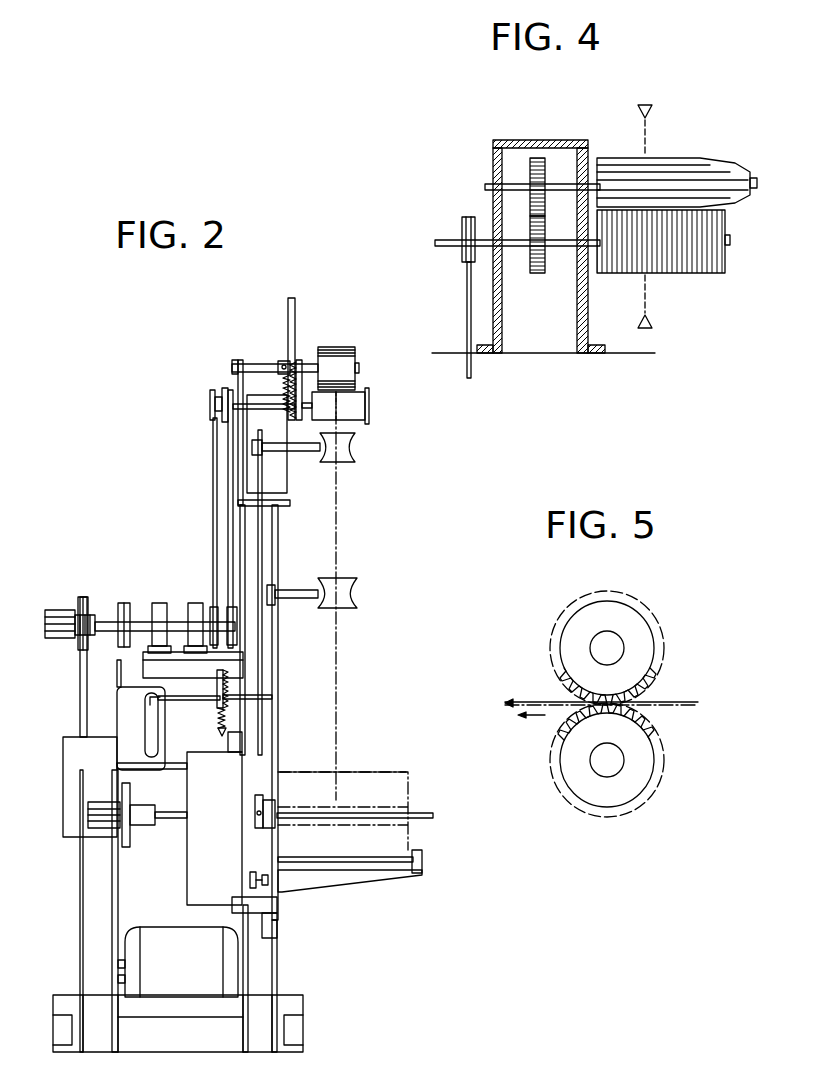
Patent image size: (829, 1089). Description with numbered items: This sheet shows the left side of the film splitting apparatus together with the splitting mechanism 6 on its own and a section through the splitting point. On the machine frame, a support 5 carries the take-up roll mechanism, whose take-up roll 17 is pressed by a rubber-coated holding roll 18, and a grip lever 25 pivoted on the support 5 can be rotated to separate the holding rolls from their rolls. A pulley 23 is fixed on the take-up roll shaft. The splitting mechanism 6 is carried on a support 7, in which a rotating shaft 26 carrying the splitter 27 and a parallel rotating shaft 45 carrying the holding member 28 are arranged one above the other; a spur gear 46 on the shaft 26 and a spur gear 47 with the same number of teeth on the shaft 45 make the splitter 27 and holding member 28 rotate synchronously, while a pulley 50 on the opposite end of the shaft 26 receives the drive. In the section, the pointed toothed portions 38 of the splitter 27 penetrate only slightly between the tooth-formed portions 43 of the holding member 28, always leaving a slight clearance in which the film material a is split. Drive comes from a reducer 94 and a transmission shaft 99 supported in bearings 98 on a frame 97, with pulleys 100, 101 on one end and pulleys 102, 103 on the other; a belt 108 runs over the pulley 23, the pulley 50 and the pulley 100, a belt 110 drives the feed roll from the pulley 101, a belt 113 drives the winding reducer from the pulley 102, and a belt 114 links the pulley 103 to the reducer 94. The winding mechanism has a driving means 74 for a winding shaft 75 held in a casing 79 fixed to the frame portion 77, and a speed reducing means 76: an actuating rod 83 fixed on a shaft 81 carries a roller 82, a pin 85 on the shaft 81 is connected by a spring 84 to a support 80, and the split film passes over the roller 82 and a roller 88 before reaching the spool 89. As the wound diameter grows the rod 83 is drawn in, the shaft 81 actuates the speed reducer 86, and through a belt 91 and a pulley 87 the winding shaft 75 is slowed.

In FIG. 2, the support 5 is at (285, 488).
In FIG. 4, the splitting mechanism 6 is at (588, 134).
In FIG. 4, the support 7 is at (493, 160).
In FIG. 2, the take-up roll 17 is at (363, 412).
In FIG. 2, the holding roll 18 is at (338, 348).
In FIG. 2, the pulley 23 is at (228, 392).
In FIG. 2, the grip lever 25 is at (296, 330).
In FIG. 4, the rotating shaft 26 is at (445, 240).
In FIG. 4, the splitter 27 is at (678, 270).
In FIG. 5, the splitter 27 is at (556, 778).
In FIG. 4, the holding member 28 is at (670, 158).
In FIG. 5, the holding member 28 is at (560, 620).
In FIG. 5, the toothed portions 38 is at (570, 715).
In FIG. 5, the tooth-formed portions 43 is at (562, 685).
In FIG. 4, the rotating shaft 45 is at (490, 187).
In FIG. 4, the spur gear 46 is at (542, 270).
In FIG. 4, the spur gear 47 is at (545, 165).
In FIG. 4, the pulley 50 is at (462, 255).
In FIG. 2, the driving means 74 is at (287, 799).
In FIG. 2, the winding shaft 75 is at (385, 808).
In FIG. 2, the speed reducing means 76 is at (318, 659).
In FIG. 2, the frame portion 77 is at (232, 732).
In FIG. 2, the casing 79 is at (190, 880).
In FIG. 2, the support 80 is at (232, 726).
In FIG. 2, the shaft 81 is at (183, 697).
In FIG. 2, the roller 82 is at (350, 462).
In FIG. 2, the actuating rod 83 is at (262, 553).
In FIG. 2, the spring 84 is at (232, 702).
In FIG. 2, the pin 85 is at (230, 672).
In FIG. 2, the speed reducer 86 is at (118, 708).
In FIG. 2, the pulley 87 is at (125, 845).
In FIG. 2, the roller 88 is at (355, 600).
In FIG. 2, the spool 89 is at (433, 815).
In FIG. 2, the belt 91 is at (130, 773).
In FIG. 2, the reducer 94 is at (73, 762).
In FIG. 2, the frame 97 is at (150, 662).
In FIG. 2, the bearings 98 is at (170, 592).
In FIG. 2, the transmission shaft 99 is at (122, 605).
In FIG. 2, the pulley 100 is at (225, 607).
In FIG. 2, the pulley 101 is at (210, 605).
In FIG. 2, the pulley 102 is at (85, 597).
In FIG. 2, the pulley 103 is at (80, 605).
In FIG. 4, the belt 108 is at (468, 296).
In FIG. 2, the belt 108 is at (232, 447).
In FIG. 2, the belt 110 is at (214, 478).
In FIG. 2, the belt 113 is at (127, 670).
In FIG. 2, the belt 114 is at (82, 718).
In FIG. 5, the film material a is at (530, 700).
In FIG. 2, the film material a is at (340, 520).